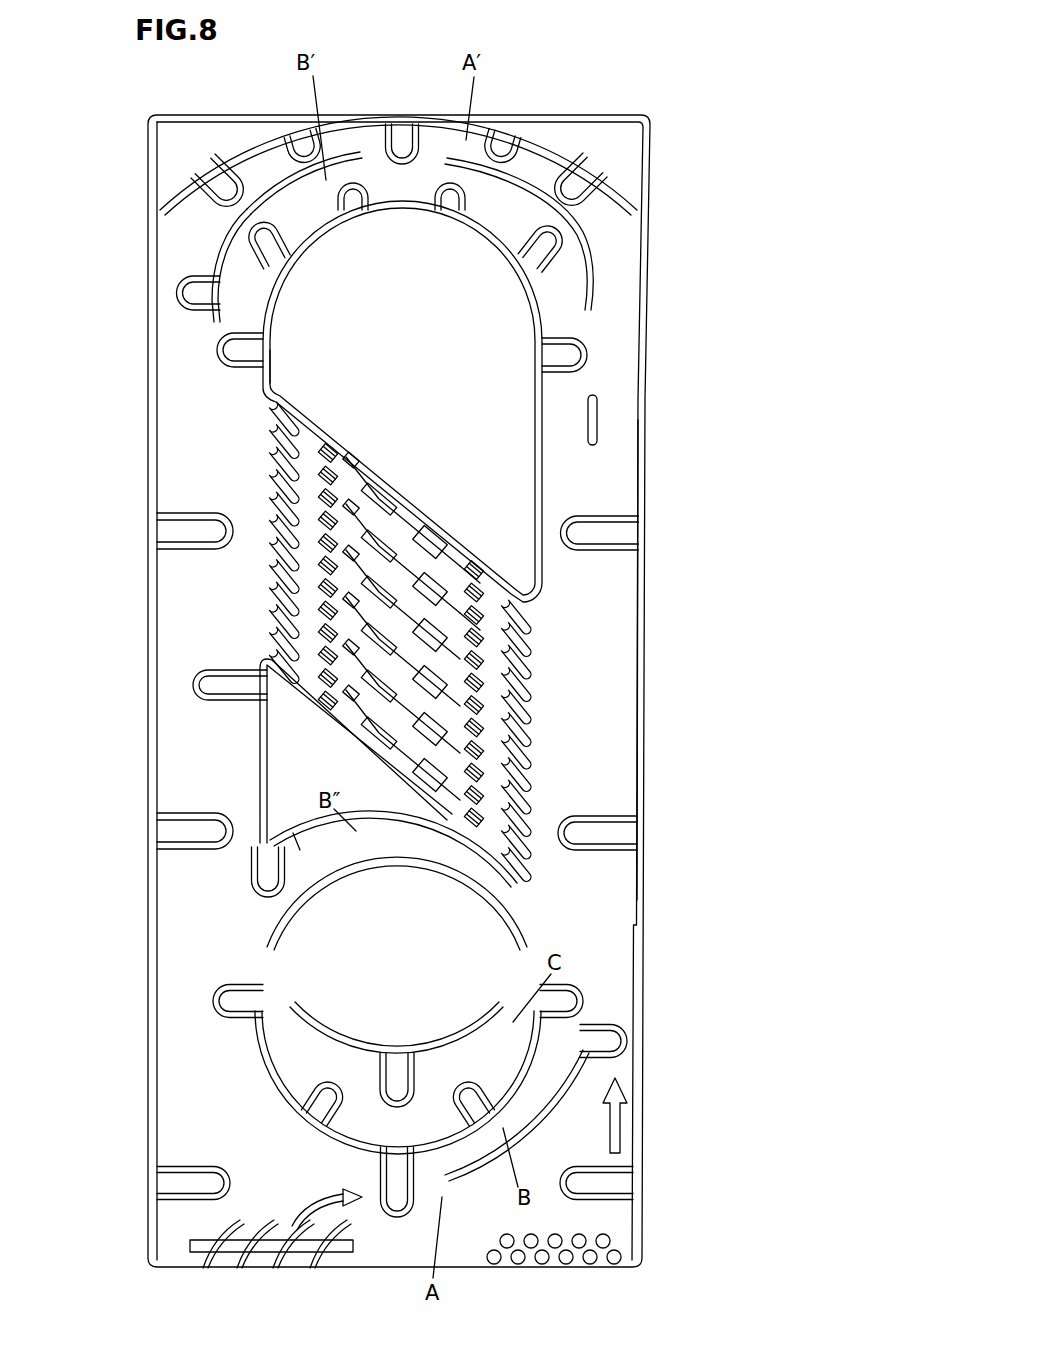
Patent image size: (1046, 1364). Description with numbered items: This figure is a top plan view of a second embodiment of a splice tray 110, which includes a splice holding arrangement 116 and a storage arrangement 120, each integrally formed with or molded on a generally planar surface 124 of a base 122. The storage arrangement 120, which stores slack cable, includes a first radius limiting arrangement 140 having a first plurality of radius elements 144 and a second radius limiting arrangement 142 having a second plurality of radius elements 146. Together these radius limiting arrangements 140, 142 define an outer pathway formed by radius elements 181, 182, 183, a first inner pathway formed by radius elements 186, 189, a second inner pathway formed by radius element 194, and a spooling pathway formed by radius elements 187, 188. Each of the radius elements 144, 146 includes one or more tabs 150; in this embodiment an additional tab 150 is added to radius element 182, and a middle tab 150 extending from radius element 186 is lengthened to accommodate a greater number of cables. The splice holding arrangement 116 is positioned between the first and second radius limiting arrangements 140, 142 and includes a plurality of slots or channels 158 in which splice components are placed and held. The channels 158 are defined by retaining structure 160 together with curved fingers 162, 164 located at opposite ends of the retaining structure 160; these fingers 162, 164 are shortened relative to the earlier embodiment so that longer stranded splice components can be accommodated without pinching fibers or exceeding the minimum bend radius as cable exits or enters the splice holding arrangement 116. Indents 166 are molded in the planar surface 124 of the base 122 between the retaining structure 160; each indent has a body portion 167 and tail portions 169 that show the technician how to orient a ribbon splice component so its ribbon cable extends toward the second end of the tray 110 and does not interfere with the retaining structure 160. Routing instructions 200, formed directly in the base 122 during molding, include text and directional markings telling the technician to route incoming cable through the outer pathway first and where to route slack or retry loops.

The splice tray 110 is at (670, 80).
The splice holding arrangement 116 is at (600, 697).
The storage arrangement 120 is at (128, 383).
The base 122 is at (152, 627).
The planar surface 124 is at (610, 741).
The first radius limiting arrangement 140 is at (215, 1118).
The second radius limiting arrangement 142 is at (665, 351).
The first plurality of radius elements 144 is at (293, 835).
The second plurality of radius elements 146 is at (392, 206).
The tabs 150 is at (205, 290).
The slots or channels 158 is at (270, 523).
The retaining structure 160 is at (428, 623).
The curved fingers 162 is at (270, 614).
The curved fingers 164 is at (524, 766).
The indents 166 is at (400, 600).
The body portion 167 is at (440, 681).
The tail portions 169 is at (353, 597).
The radius element 181 is at (462, 1182).
The radius element 182 is at (285, 180).
The radius element 183 is at (527, 182).
The radius element 186 is at (340, 1136).
The radius element 187 is at (270, 930).
The radius element 188 is at (258, 767).
The radius element 189 is at (275, 380).
The radius element 194 is at (333, 1037).
The routing instructions 200 is at (310, 222).